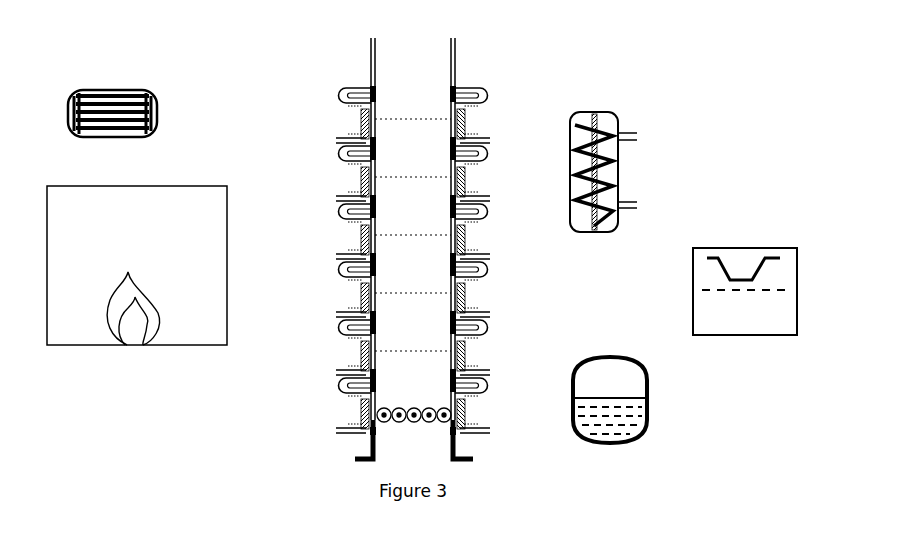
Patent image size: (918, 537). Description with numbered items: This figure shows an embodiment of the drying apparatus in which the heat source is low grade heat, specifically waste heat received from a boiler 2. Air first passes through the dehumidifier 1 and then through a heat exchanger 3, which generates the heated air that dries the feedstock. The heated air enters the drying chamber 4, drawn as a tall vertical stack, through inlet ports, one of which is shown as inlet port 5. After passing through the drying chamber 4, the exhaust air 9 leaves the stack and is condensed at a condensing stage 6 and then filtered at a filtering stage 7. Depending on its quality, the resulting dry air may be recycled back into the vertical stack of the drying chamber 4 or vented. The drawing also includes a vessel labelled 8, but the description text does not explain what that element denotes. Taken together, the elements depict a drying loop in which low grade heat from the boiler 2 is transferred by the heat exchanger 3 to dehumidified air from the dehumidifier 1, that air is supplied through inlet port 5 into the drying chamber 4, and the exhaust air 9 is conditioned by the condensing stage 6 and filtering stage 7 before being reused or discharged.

The dehumidifier 1 is at (103, 80).
The boiler 2 is at (98, 181).
The heat exchanger 3 is at (345, 106).
The drying chamber 4 is at (404, 236).
The inlet port 5 is at (330, 142).
The condenser 6 is at (621, 107).
The filter 7 is at (743, 241).
The storage tank 8 is at (619, 347).
The exhaust air 9 is at (495, 139).